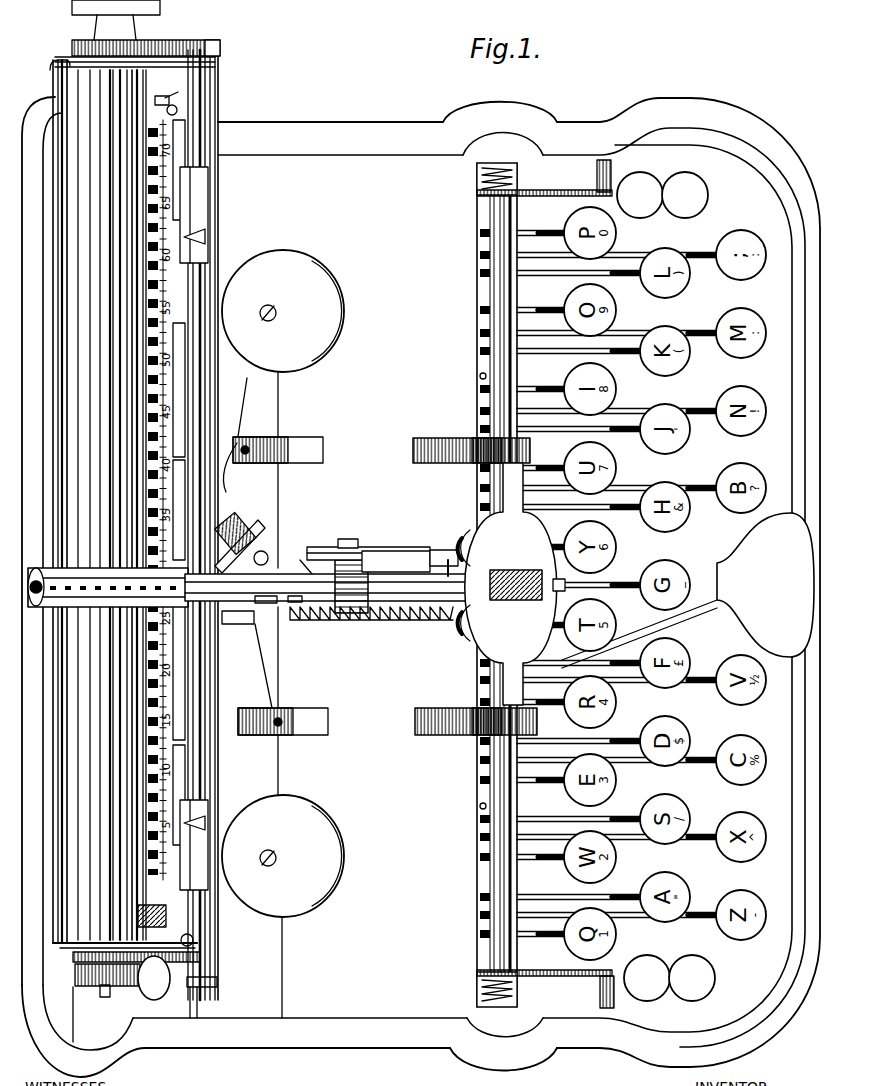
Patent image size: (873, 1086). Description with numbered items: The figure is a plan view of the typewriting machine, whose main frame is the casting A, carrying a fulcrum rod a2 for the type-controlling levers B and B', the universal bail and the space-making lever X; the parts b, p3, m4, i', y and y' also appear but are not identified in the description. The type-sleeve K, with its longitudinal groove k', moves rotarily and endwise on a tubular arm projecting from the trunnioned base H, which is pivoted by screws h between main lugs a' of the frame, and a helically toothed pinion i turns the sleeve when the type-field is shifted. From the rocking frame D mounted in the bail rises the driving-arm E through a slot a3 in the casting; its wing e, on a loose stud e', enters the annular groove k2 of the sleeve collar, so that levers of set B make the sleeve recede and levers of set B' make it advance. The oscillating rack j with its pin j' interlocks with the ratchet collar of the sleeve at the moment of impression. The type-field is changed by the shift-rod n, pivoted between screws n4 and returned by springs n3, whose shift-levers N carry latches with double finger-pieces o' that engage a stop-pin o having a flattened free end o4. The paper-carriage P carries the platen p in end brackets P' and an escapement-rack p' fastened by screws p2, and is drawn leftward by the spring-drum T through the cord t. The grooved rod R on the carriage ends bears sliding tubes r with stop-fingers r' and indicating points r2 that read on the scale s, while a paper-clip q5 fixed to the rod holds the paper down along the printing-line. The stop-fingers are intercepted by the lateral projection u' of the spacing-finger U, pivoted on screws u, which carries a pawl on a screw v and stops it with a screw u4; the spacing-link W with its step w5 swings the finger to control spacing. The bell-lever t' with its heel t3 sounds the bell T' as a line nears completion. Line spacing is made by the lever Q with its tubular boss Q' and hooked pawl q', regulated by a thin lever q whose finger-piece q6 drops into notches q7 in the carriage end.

The main frame casting A is at (421, 577).
The pivot-screws n4 is at (500, 586).
The fulcrum rod a2 is at (83, 1031).
The paper-carriage P is at (131, 491).
The platen p is at (112, 505).
The scale s is at (168, 481).
The grooved rod R is at (208, 72).
The cord t is at (223, 525).
The end brackets P' is at (156, 508).
The platen bracket p3 is at (125, 20).
The escapement-rack p' is at (174, 92).
The screws p2 is at (158, 104).
The paper-clip q5 is at (52, 64).
The sliding tubes r is at (207, 534).
The stop-fingers r' is at (217, 525).
The points r2 is at (195, 529).
The hooked pawl q' is at (125, 959).
The line-space regulator lever q is at (97, 977).
The line-space lever Q is at (154, 978).
The tubular boss Q' is at (137, 919).
The finger-piece q6 is at (97, 1000).
The notches q7 is at (118, 996).
The type-sleeve K is at (110, 567).
The longitudinal groove k' is at (32, 571).
The lateral projection u' is at (266, 592).
The screw u4 is at (291, 589).
The annular groove k2 is at (352, 614).
The oscillating rack j is at (371, 629).
The driving-arm E is at (368, 545).
The loose stud e' is at (350, 536).
The wing e is at (302, 562).
The rocking frame D is at (396, 550).
The slot a3 is at (443, 548).
The pin j' is at (442, 564).
The shift-lever N is at (556, 197).
The shift-rod n is at (506, 380).
The pivot m4 is at (479, 375).
The type-controlling levers B' is at (598, 311).
The type-controlling levers B is at (598, 864).
The key stem b is at (642, 600).
The main lugs a' is at (475, 587).
The pivot screws h is at (520, 460).
The trunnioned base H is at (507, 584).
The pinion i is at (516, 575).
The coupling stud i' is at (562, 570).
The springs n3 is at (509, 585).
The free end of stop-pin o4 is at (544, 584).
The stop-pin o is at (615, 588).
The double finger-piece o' is at (666, 587).
The space-making lever X is at (719, 578).
The bell T' is at (283, 311).
The spring-drum T is at (283, 856).
The bell-lever t' is at (257, 407).
The screws u is at (280, 588).
The spacing-finger U is at (291, 629).
The heel t3 is at (234, 472).
The lever y is at (240, 540).
The lever block y' is at (235, 522).
The screw v is at (270, 551).
The spacing-link W is at (237, 628).
The stop step w5 is at (256, 666).